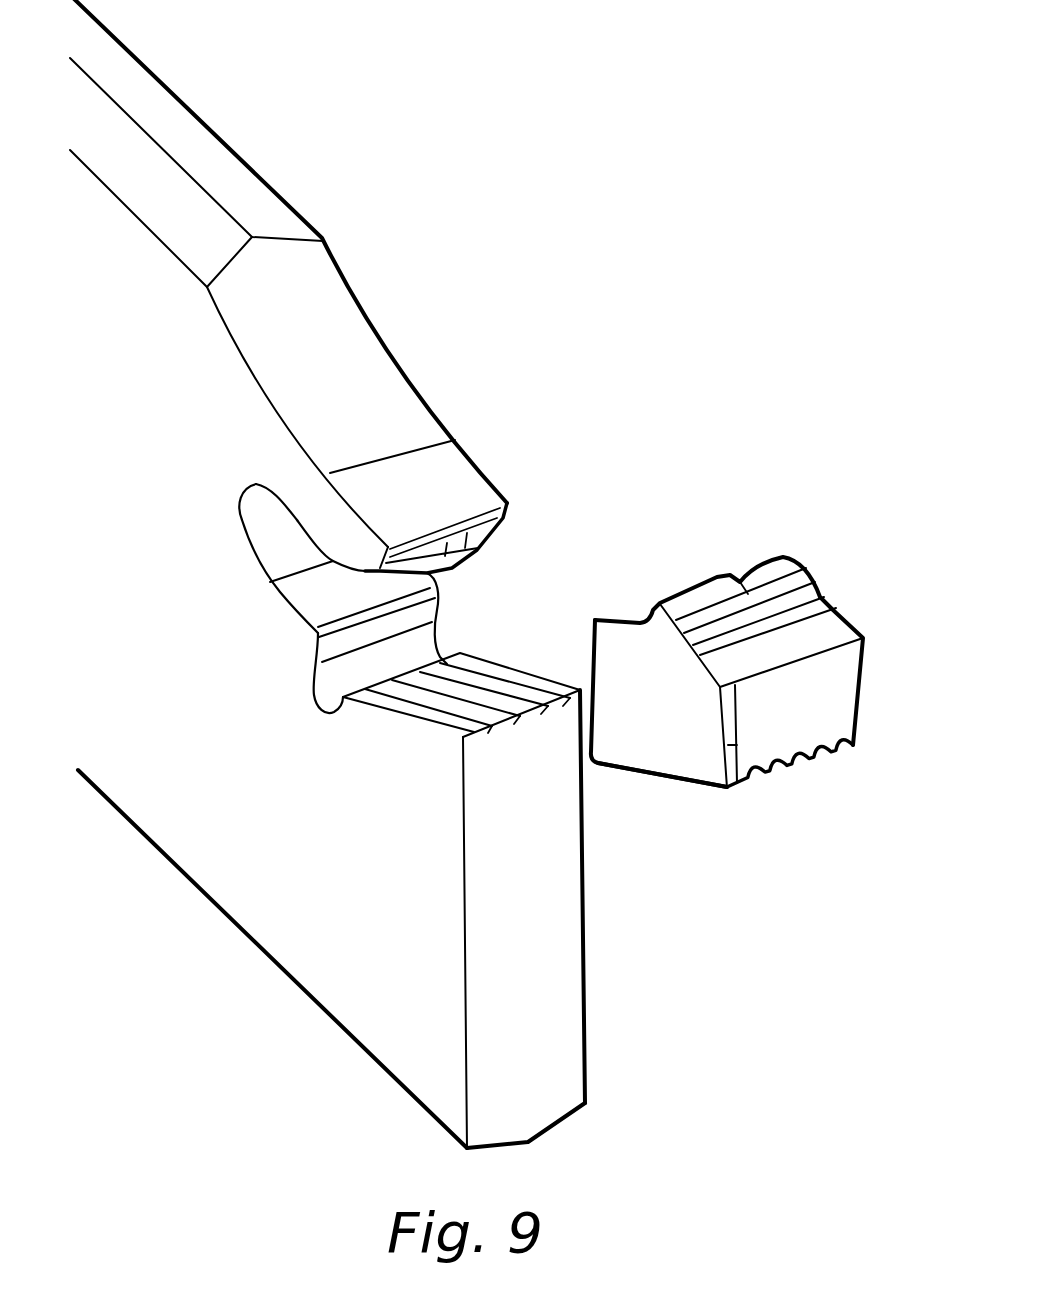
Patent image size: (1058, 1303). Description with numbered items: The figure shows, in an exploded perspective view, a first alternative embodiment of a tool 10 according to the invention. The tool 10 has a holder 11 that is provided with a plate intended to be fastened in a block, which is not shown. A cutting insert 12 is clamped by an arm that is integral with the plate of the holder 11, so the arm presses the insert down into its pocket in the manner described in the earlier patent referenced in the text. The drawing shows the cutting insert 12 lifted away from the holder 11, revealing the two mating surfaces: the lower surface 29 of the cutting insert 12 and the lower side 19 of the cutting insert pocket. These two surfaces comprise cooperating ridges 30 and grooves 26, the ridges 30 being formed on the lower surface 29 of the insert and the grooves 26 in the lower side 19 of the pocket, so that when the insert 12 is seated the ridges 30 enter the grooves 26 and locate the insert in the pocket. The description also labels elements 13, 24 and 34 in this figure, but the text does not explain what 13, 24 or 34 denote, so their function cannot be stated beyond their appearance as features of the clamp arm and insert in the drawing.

The tool 10 is at (572, 380).
The holder 11 is at (320, 231).
The cutting insert 12 is at (773, 555).
The resilient spring portion of clamp 13 is at (330, 523).
The lower side of the cutting insert pocket 19 is at (420, 715).
The rake face with chip-breaking grooves 24 is at (825, 650).
The grooves 26 is at (560, 713).
The lower surface of the cutting insert 29 is at (680, 780).
The ridges 30 is at (757, 788).
The clamp abutment ledge 34 is at (330, 653).